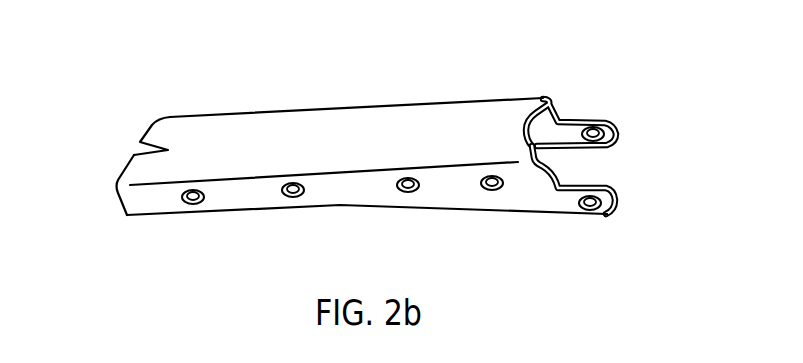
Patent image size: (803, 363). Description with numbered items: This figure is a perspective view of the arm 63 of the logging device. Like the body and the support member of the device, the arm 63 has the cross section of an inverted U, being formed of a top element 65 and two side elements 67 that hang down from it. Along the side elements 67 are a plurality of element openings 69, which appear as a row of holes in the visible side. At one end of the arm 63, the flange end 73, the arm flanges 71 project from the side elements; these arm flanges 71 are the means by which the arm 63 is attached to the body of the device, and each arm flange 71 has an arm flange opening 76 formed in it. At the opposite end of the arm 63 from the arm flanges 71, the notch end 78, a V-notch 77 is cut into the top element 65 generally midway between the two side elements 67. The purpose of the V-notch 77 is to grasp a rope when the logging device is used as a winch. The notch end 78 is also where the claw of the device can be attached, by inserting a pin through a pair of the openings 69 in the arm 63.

The arm 63 is at (343, 107).
The top element 65 is at (308, 117).
The side elements 67 is at (557, 217).
The element openings 69 is at (290, 200).
The arm flanges 71 is at (597, 185).
The flange end 73 is at (613, 130).
The arm flange opening 76 is at (632, 240).
The V-notch 77 is at (140, 146).
The notch end 78 is at (115, 197).